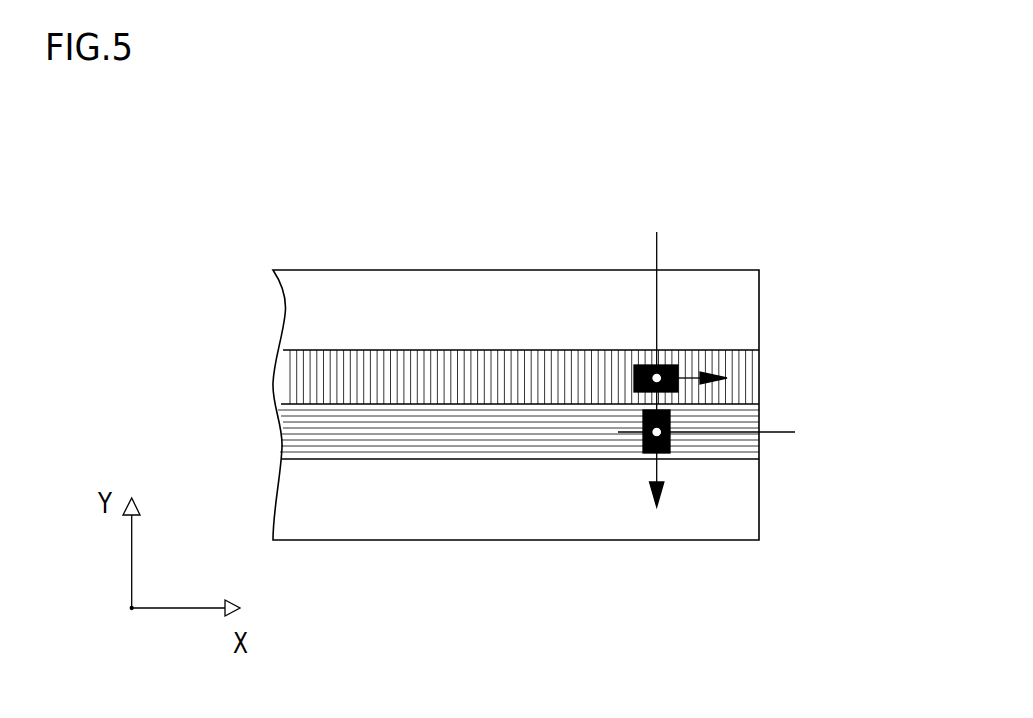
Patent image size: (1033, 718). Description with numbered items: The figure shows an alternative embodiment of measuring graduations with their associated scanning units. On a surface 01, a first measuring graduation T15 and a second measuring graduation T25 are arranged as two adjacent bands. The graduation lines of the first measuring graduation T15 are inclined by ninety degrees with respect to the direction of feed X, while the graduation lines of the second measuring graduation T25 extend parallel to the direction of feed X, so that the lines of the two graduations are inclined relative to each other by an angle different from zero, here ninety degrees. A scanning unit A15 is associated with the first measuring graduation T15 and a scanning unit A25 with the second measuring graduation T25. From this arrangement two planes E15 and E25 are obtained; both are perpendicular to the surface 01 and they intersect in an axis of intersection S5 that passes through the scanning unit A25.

The surface 01 is at (360, 297).
The first measuring graduation T15 is at (285, 365).
The second measuring graduation T25 is at (283, 433).
The plane E15 is at (660, 249).
The plane E25 is at (773, 432).
The scanning unit A15 is at (672, 367).
The scanning unit A25 is at (670, 455).
The axis of intersection S5 is at (641, 440).